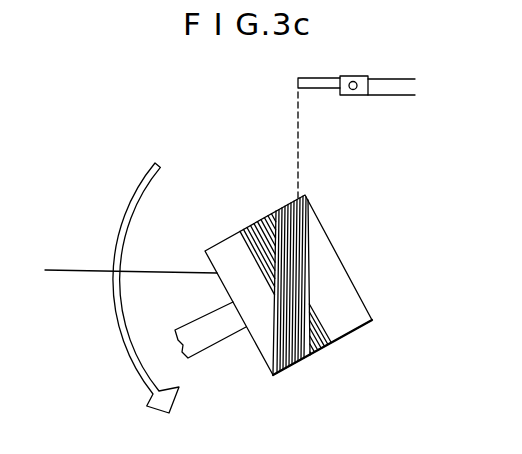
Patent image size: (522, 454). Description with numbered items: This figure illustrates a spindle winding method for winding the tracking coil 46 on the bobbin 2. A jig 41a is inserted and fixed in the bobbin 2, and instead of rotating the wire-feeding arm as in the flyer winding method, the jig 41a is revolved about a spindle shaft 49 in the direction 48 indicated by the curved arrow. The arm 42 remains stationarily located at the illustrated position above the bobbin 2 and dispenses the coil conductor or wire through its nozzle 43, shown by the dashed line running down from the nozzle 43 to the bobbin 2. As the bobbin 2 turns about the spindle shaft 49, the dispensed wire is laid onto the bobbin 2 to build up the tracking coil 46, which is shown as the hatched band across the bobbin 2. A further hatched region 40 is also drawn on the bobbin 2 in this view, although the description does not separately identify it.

The bobbin 2 is at (333, 258).
The acoustic wave region 40 is at (320, 335).
The jig 41a is at (208, 344).
The arm 42 is at (393, 79).
The wire dispensing nozzle 43 is at (300, 77).
The tracking coil 46 is at (293, 355).
The direction of revolution 48 is at (132, 374).
The spindle shaft 49 is at (68, 275).